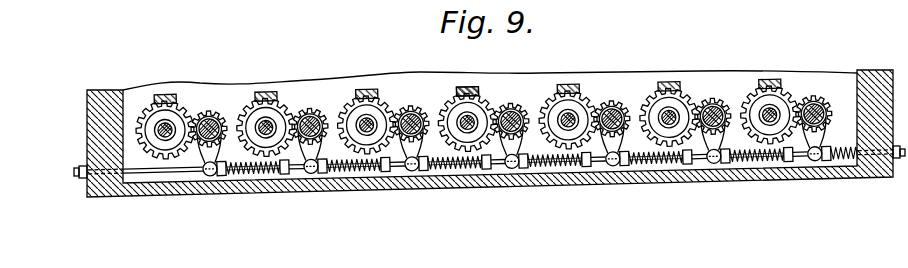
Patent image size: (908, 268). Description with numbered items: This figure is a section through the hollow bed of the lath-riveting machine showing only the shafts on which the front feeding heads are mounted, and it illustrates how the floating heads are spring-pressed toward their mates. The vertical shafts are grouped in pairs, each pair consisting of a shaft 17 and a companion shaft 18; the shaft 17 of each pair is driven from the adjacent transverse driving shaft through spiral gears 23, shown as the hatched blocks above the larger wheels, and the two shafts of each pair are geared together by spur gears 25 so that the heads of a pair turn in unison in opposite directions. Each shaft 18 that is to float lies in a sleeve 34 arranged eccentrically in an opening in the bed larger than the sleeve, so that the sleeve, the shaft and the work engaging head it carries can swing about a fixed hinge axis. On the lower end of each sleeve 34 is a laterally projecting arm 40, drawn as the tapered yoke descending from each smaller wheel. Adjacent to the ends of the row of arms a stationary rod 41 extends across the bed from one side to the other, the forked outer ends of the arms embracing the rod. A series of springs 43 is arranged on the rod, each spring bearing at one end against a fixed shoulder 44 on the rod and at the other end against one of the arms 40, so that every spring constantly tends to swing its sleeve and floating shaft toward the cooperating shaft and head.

The vertical shaft 17 is at (172, 122).
The floating vertical shaft 18 is at (212, 116).
The spiral gear 23 is at (480, 88).
The spur gear 25 is at (576, 108).
The sleeve 34 is at (414, 115).
The arm 40 is at (203, 153).
The stationary rod 41 is at (140, 171).
The spring 43 is at (245, 173).
The fixed shoulder 44 is at (283, 174).